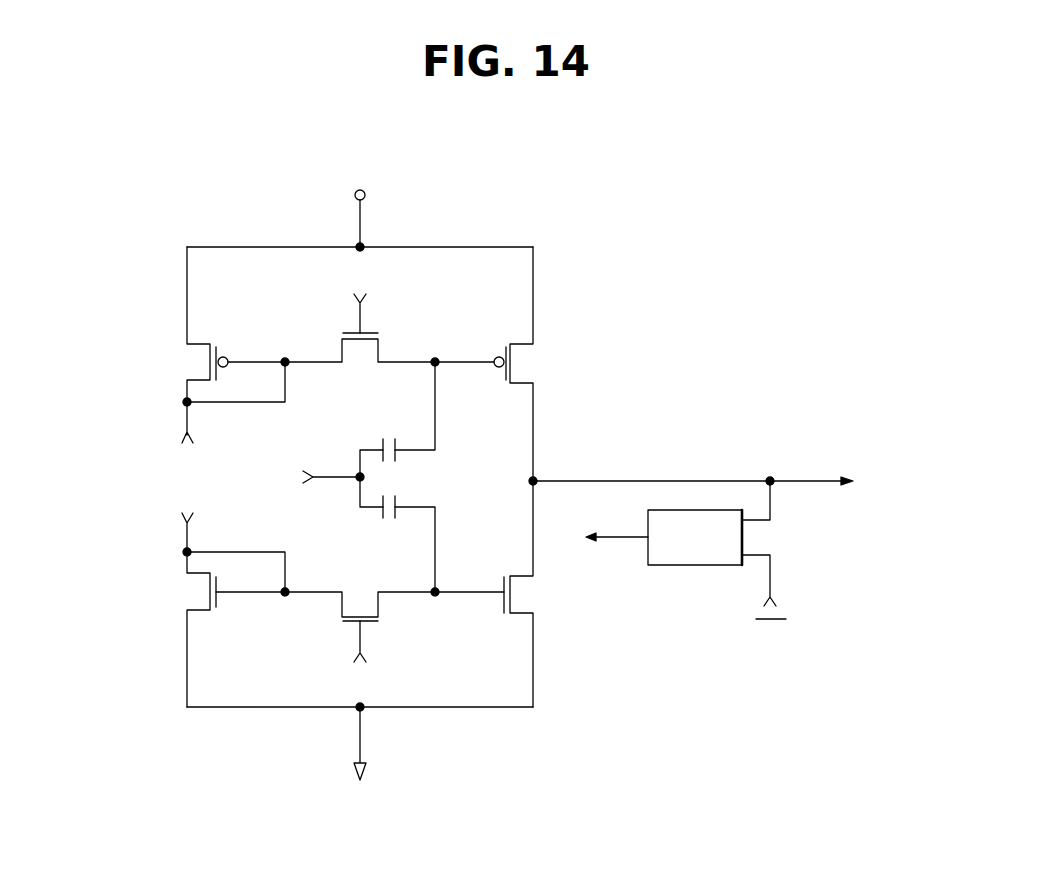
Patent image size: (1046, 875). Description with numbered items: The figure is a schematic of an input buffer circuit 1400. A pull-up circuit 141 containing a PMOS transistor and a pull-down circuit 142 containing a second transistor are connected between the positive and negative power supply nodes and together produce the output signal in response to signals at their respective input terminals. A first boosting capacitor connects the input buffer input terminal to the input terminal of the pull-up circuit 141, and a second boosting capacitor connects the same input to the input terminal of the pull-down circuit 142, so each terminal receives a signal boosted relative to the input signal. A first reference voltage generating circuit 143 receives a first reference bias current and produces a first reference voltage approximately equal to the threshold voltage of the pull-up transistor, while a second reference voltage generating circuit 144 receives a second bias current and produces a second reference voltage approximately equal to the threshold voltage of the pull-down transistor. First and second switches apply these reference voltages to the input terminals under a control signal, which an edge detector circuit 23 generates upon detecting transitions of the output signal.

The input buffer circuit 1400 is at (678, 218).
The pull-up circuit 141 is at (592, 357).
The pull-down circuit 142 is at (576, 632).
The first reference voltage generating circuit 143 is at (134, 358).
The second reference voltage generating circuit 144 is at (134, 590).
The edge detector circuit 23 is at (688, 565).